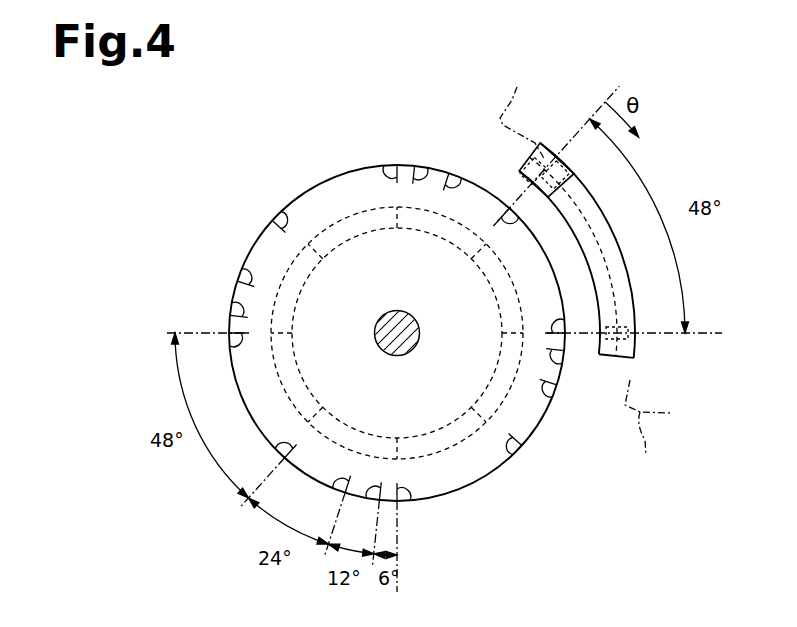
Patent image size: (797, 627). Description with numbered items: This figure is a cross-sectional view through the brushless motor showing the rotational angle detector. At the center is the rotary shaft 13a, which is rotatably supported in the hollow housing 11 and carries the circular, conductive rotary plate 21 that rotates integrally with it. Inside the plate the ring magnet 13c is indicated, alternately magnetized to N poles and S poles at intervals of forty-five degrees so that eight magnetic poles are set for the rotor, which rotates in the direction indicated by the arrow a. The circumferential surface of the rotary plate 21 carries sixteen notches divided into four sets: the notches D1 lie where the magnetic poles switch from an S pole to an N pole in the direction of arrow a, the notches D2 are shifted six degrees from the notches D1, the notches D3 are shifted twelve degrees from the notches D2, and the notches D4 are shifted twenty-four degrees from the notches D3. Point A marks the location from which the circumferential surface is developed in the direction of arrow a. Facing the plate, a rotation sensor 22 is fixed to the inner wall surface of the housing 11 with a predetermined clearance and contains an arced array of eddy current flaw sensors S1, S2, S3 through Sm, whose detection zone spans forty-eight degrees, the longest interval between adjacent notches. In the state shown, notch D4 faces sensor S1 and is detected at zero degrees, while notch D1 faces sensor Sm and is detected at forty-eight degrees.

The rotary plate 21 is at (316, 153).
The rotation sensor 22 is at (623, 262).
The housing 11 is at (585, 285).
The rotary shaft 13a is at (406, 311).
The ring magnet 13c is at (525, 297).
The eddy current flaw sensor S1 is at (543, 158).
The eddy current flaw sensor S2 is at (570, 175).
The eddy current flaw sensor S3 is at (585, 190).
The eddy current flaw sensor Sm is at (626, 328).
The notch D1 is at (389, 164).
The notch D2 is at (426, 170).
The notch D3 is at (462, 178).
The notch D4 is at (281, 211).
The point A is at (397, 163).
The arrow a is at (483, 134).